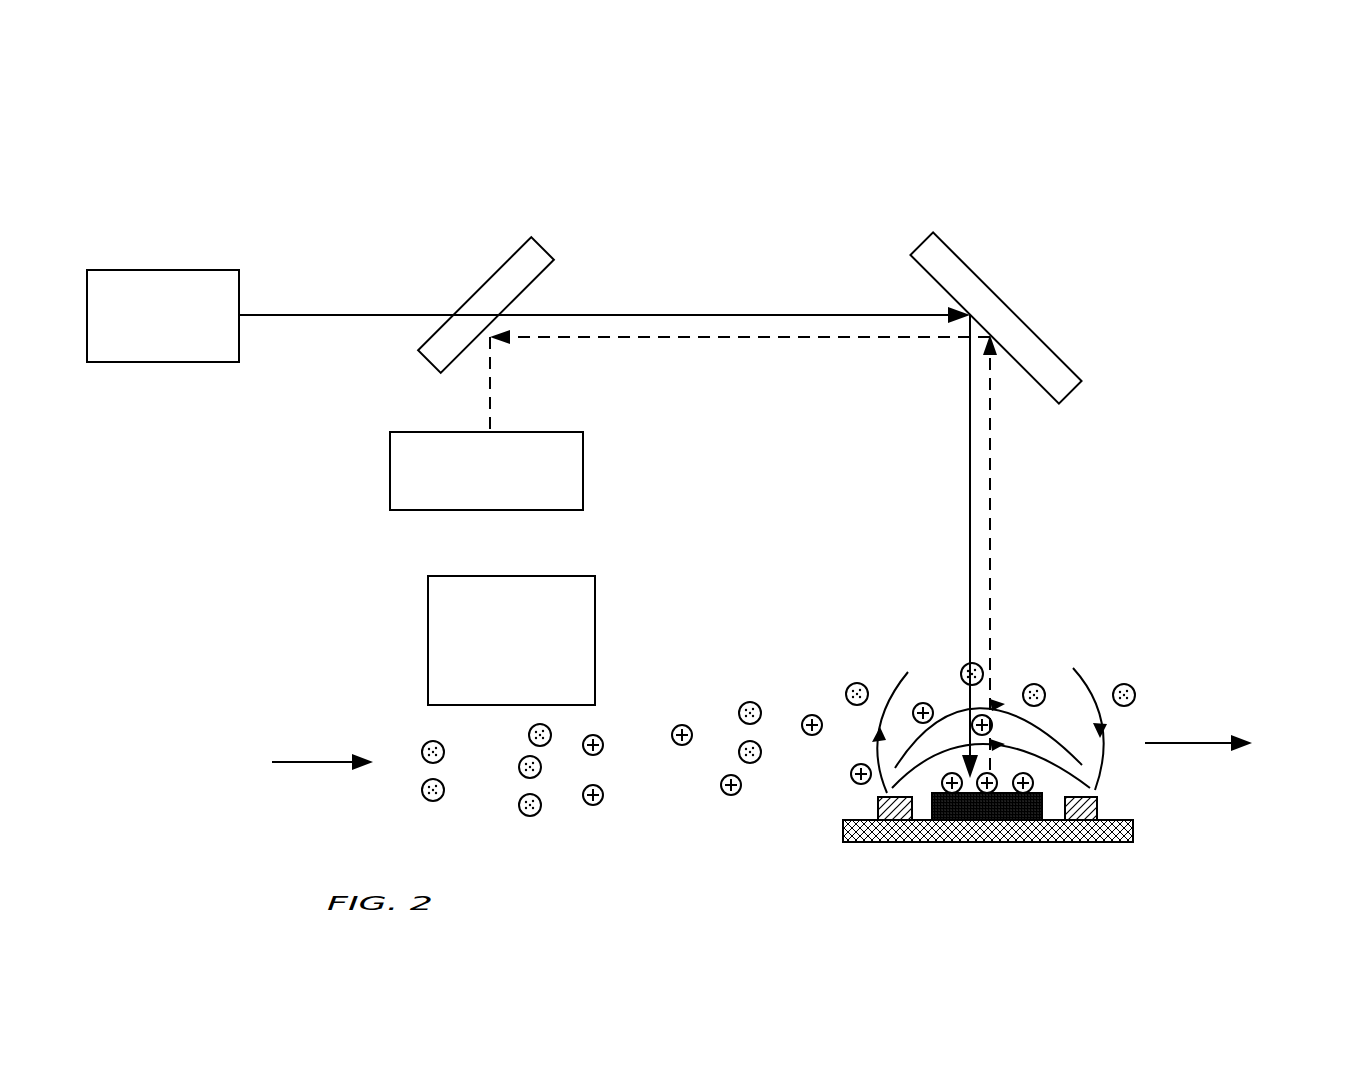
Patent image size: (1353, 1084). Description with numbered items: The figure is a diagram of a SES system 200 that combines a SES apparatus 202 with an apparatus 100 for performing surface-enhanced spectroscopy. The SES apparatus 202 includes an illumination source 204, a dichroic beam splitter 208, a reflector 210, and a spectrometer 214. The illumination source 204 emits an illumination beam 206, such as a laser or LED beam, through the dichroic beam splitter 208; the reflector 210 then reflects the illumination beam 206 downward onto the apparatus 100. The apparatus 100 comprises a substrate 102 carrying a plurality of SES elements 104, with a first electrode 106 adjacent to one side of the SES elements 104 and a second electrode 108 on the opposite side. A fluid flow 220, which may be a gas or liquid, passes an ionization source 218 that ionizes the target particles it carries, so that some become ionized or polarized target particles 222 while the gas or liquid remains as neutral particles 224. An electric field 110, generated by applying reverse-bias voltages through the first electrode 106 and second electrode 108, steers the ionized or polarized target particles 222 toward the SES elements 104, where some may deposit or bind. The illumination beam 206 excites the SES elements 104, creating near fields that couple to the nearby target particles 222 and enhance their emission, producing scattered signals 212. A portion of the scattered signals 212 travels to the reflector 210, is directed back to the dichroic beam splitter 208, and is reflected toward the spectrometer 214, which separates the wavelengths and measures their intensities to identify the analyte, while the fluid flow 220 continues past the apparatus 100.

The SES system 200 is at (648, 79).
The SES apparatus 202 is at (228, 203).
The illumination source 204 is at (163, 316).
The illumination beam 206 is at (720, 313).
The dichroic beam splitter 208 is at (478, 300).
The reflector 210 is at (970, 263).
The scattered signals 212 is at (687, 338).
The spectrometer 214 is at (486, 471).
The ionization source 218 is at (511, 640).
The fluid flow 220 is at (761, 742).
The ionized or polarized target particles 222 is at (722, 778).
The neutral particles 224 is at (1043, 690).
The electric field 110 is at (907, 673).
The apparatus 100 is at (888, 854).
The substrate 102 is at (849, 843).
The SES elements 104 is at (977, 822).
The first electrode 106 is at (892, 843).
The second electrode 108 is at (1086, 843).